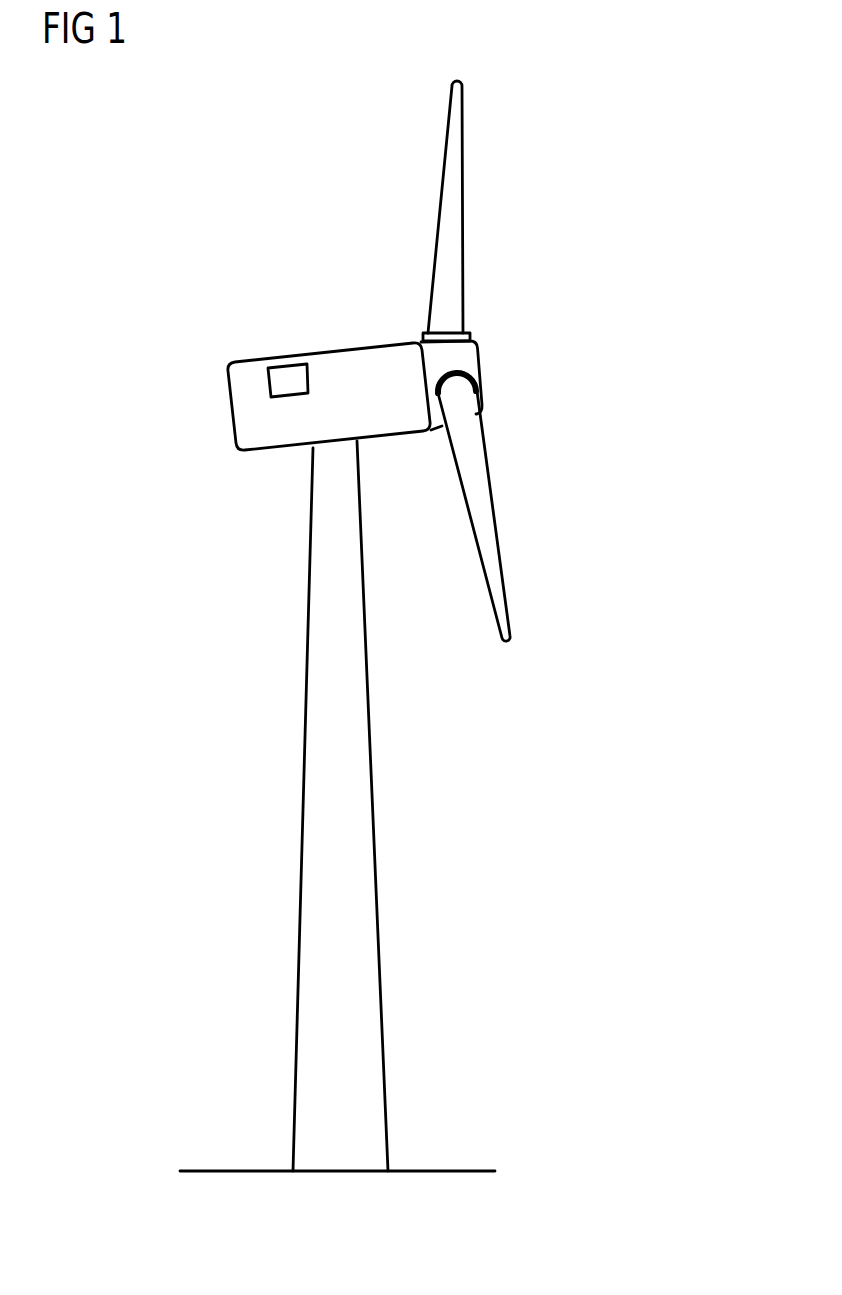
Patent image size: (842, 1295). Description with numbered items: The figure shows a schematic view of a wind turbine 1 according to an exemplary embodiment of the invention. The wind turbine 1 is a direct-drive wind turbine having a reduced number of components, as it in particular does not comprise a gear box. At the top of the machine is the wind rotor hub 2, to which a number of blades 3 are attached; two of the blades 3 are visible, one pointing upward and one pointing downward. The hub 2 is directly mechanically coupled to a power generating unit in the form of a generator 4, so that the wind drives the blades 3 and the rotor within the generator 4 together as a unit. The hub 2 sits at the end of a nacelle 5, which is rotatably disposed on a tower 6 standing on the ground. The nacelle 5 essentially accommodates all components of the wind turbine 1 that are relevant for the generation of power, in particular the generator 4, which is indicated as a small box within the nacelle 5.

The wind turbine 1 is at (617, 137).
The wind rotor hub 2 is at (490, 338).
The blades 3 is at (463, 207).
The generator 4 is at (283, 365).
The nacelle 5 is at (237, 360).
The tower 6 is at (312, 573).